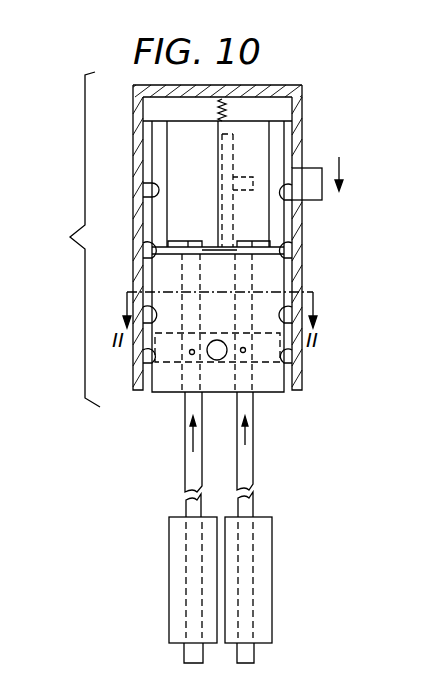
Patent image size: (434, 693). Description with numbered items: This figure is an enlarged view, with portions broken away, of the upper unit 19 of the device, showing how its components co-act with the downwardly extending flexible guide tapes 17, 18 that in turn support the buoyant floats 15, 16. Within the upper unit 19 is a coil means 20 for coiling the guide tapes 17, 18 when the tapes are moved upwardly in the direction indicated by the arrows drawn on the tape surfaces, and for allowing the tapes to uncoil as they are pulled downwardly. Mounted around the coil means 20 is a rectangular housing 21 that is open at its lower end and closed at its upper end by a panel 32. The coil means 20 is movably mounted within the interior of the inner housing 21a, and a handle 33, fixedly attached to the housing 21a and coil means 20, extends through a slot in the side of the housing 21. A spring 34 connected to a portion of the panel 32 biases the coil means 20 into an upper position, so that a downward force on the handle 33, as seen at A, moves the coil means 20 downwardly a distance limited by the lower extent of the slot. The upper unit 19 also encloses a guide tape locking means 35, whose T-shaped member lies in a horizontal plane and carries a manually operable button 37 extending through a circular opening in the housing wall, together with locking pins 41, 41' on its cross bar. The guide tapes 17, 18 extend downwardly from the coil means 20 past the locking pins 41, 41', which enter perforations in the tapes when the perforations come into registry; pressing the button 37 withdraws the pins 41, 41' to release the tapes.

The upper unit 19 is at (73, 239).
The housing 21 is at (302, 127).
The inner housing 21a is at (148, 146).
The panel 32 is at (292, 85).
The spring 34 is at (228, 108).
The coil means 20 is at (205, 198).
The handle 33 is at (312, 188).
The downward force direction A is at (346, 168).
The guide tape locking means 35 is at (160, 364).
The manually operable button 37 is at (217, 355).
The locking pin 41 is at (173, 393).
The locking pin 41' is at (277, 389).
The flexible guide tape 17 is at (185, 457).
The flexible guide tape 18 is at (250, 458).
The buoyant float 15 is at (172, 571).
The buoyant float 16 is at (267, 582).